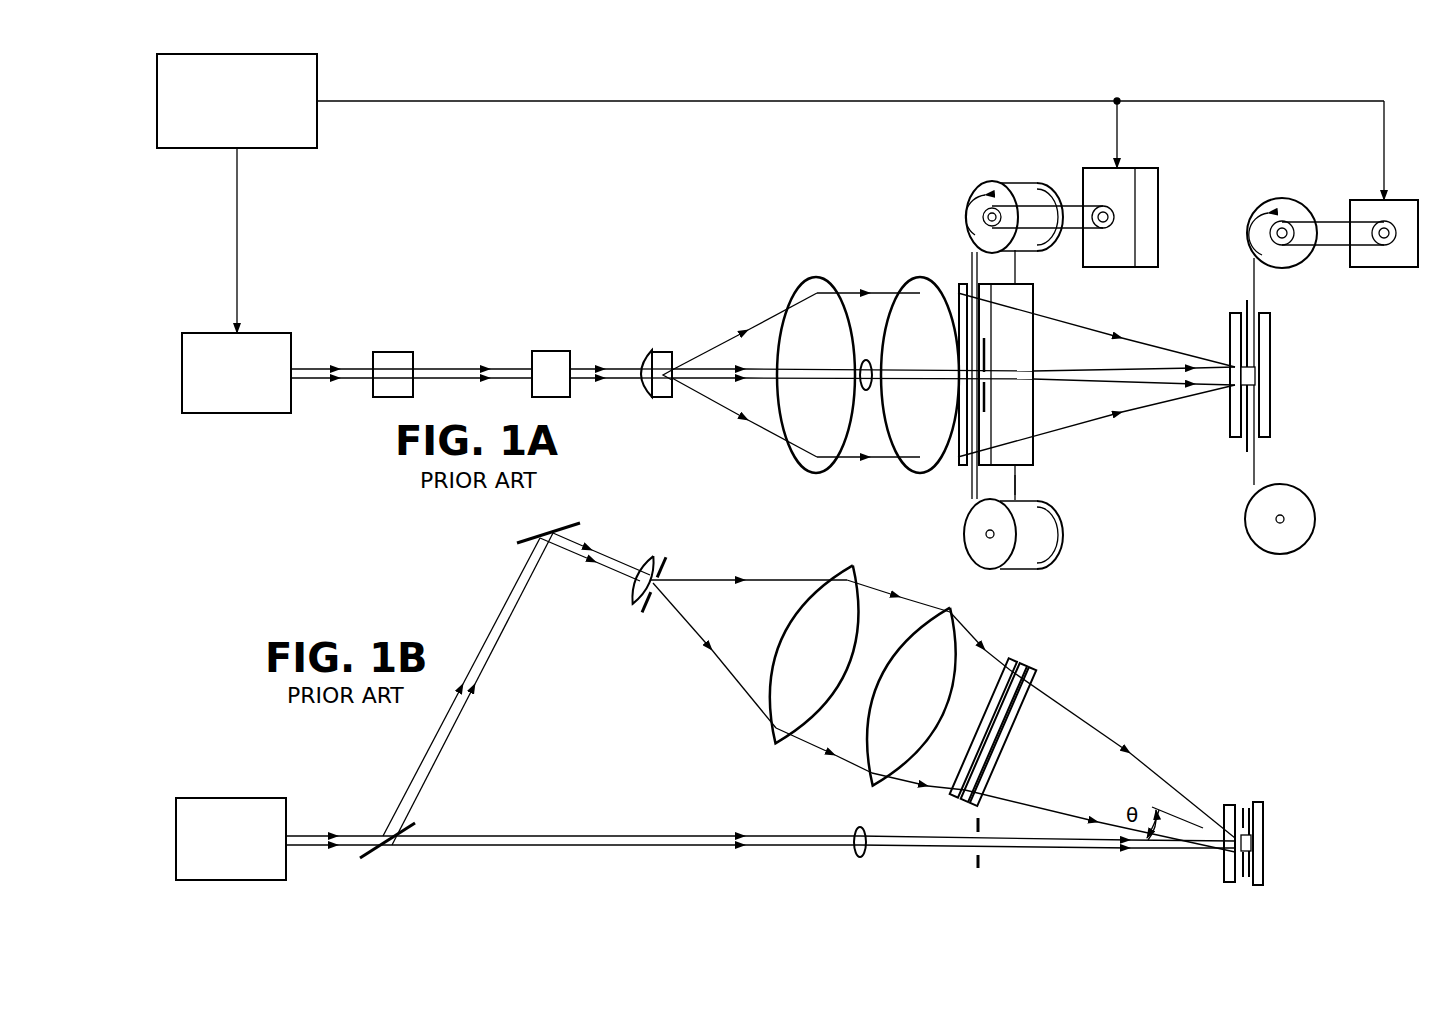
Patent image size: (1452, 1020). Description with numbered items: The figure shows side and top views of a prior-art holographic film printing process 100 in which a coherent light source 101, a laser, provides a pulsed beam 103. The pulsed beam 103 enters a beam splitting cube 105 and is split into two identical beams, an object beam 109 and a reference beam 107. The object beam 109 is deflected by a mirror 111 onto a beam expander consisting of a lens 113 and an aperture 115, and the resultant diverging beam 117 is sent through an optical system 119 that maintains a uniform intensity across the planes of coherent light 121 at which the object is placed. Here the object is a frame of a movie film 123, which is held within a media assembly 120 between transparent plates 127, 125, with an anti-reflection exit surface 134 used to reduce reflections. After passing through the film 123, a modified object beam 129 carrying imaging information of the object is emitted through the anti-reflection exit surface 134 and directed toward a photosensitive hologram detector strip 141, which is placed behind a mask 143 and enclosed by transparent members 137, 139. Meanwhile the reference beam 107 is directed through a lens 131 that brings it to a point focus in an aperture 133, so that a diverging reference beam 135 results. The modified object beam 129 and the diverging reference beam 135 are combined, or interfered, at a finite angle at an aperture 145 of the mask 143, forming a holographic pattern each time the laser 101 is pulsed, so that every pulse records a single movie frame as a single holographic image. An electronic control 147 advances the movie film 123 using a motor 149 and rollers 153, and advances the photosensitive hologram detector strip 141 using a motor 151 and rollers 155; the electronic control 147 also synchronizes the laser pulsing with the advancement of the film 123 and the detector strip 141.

In FIG. 1A, the laser thermal printing system 100 is at (340, 479).
In FIG. 1B, the laser thermal printing system 100 is at (1138, 668).
In FIG. 1A, the coherent light source 101 is at (235, 413).
In FIG. 1B, the coherent light source 101 is at (232, 798).
In FIG. 1A, the pulsed beam 103 is at (315, 371).
In FIG. 1B, the pulsed beam 103 is at (352, 835).
In FIG. 1A, the beam splitting cube 105 is at (391, 352).
In FIG. 1B, the beam splitting cube 105 is at (385, 857).
In FIG. 1B, the reference beam 107 is at (585, 835).
In FIG. 1B, the object beam 109 is at (490, 665).
In FIG. 1A, the mirror 111 is at (549, 351).
In FIG. 1B, the mirror 111 is at (518, 535).
In FIG. 1A, the lens 113 is at (646, 350).
In FIG. 1B, the lens 113 is at (635, 600).
In FIG. 1A, the aperture 115 is at (663, 400).
In FIG. 1B, the aperture 115 is at (665, 560).
In FIG. 1A, the diverging beam 117 is at (755, 334).
In FIG. 1B, the diverging beam 117 is at (782, 600).
In FIG. 1A, the optical system 119 is at (816, 278).
In FIG. 1B, the optical system 119 is at (773, 735).
In FIG. 1A, the media assembly 120 is at (1033, 352).
In FIG. 1A, the planes of coherent light 121 is at (959, 298).
In FIG. 1B, the planes of coherent light 121 is at (940, 780).
In FIG. 1A, the movie film 123 is at (1015, 485).
In FIG. 1B, the movie film 123 is at (995, 760).
In FIG. 1A, the transparent plate 125 is at (1011, 400).
In FIG. 1B, the transparent plate 125 is at (1035, 670).
In FIG. 1A, the transparent plate 127 is at (961, 468).
In FIG. 1B, the transparent plate 127 is at (1012, 660).
In FIG. 1A, the modified object beam 129 is at (1135, 348).
In FIG. 1B, the modified object beam 129 is at (1142, 765).
In FIG. 1A, the lens 131 is at (866, 358).
In FIG. 1B, the lens 131 is at (853, 846).
In FIG. 1B, the aperture 133 is at (973, 858).
In FIG. 1A, the anti-reflection exit surface 134 is at (1033, 440).
In FIG. 1B, the anti-reflection exit surface 134 is at (1020, 728).
In FIG. 1A, the diverging reference beam 135 is at (1165, 378).
In FIG. 1B, the diverging reference beam 135 is at (1108, 845).
In FIG. 1A, the transparent member 137 is at (1232, 440).
In FIG. 1B, the transparent member 137 is at (1220, 870).
In FIG. 1A, the transparent member 139 is at (1274, 412).
In FIG. 1B, the transparent member 139 is at (1264, 808).
In FIG. 1A, the photosensitive hologram detector strip 141 is at (1247, 300).
In FIG. 1B, the photosensitive hologram detector strip 141 is at (1252, 858).
In FIG. 1A, the mask 143 is at (1262, 291).
In FIG. 1B, the mask 143 is at (1243, 805).
In FIG. 1A, the aperture 145 is at (1272, 376).
In FIG. 1B, the aperture 145 is at (1252, 843).
In FIG. 1A, the electronic control 147 is at (185, 148).
In FIG. 1A, the motor 149 is at (1158, 185).
In FIG. 1A, the motor 151 is at (1383, 267).
In FIG. 1A, the rollers 153 is at (965, 198).
In FIG. 1A, the rollers 155 is at (1282, 198).